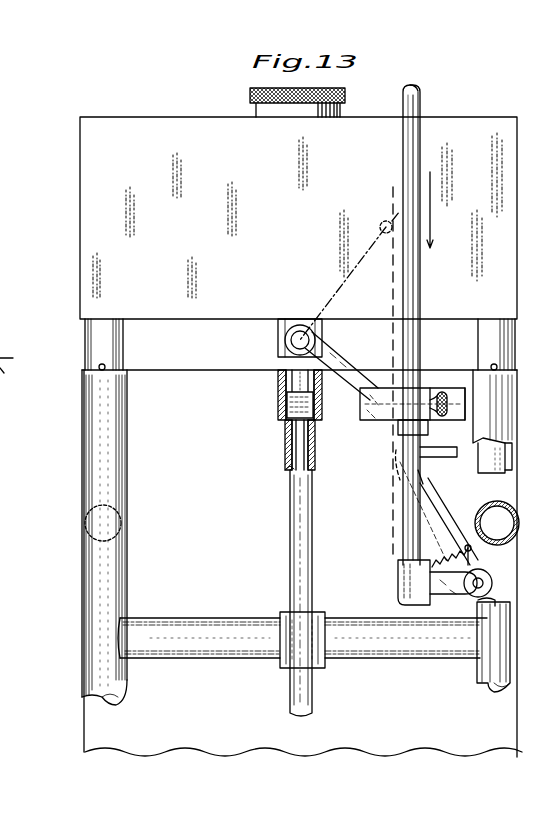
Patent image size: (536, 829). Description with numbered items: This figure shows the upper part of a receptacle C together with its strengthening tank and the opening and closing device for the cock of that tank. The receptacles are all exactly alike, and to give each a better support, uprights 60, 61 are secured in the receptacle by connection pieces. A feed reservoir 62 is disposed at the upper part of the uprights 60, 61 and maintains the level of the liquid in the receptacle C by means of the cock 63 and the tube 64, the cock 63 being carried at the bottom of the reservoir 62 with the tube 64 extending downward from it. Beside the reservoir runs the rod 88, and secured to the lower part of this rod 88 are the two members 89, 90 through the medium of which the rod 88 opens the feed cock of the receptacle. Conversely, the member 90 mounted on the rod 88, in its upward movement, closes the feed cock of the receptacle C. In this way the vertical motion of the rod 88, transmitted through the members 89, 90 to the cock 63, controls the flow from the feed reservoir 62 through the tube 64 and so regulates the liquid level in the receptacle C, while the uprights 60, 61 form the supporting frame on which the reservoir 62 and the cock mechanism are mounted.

The feed reservoir 62 is at (93, 247).
The receptacle C is at (194, 381).
The rod 88 is at (411, 284).
The upright 60 is at (116, 604).
The upright 61 is at (490, 671).
The tube 64 is at (308, 588).
The cock 63 is at (295, 349).
The member 89 is at (376, 412).
The member 90 is at (451, 583).